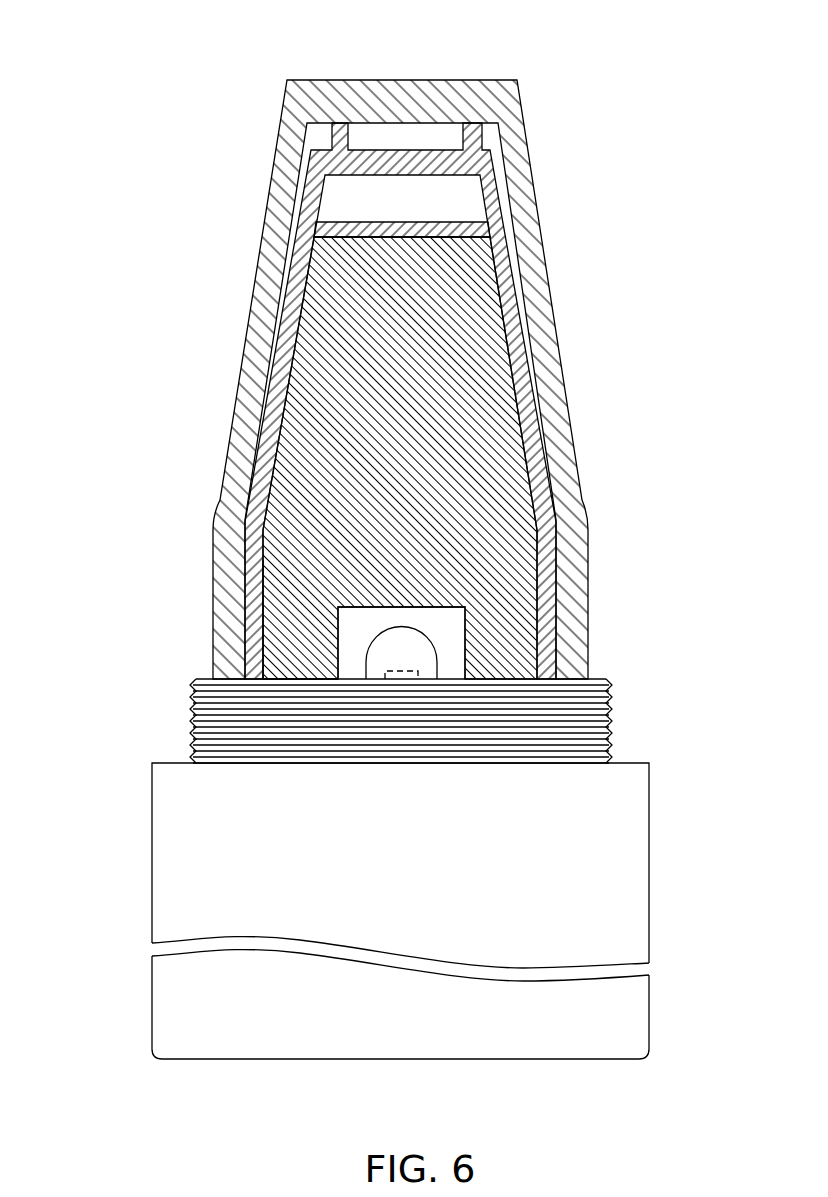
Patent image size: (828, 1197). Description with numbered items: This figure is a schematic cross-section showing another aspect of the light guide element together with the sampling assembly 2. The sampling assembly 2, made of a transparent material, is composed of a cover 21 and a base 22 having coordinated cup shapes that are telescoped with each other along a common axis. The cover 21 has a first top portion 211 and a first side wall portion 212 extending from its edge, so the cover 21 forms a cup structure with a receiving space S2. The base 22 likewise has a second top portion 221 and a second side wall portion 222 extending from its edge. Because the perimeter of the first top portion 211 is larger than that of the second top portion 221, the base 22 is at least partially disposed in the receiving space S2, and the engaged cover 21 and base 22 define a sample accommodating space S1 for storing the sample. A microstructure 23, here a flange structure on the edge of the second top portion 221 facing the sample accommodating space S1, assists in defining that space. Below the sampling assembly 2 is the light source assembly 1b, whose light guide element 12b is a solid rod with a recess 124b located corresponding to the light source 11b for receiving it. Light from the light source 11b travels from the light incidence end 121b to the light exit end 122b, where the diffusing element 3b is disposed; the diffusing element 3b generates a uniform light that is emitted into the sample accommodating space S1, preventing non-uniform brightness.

The sampling assembly 2 is at (372, 35).
The cover 21 is at (400, 352).
The first top portion 211 is at (423, 92).
The first side wall portion 212 is at (268, 195).
The base 22 is at (421, 358).
The second top portion 221 is at (447, 165).
The second side wall portion 222 is at (512, 318).
The microstructure 23 is at (472, 137).
The sample accommodating space S1 is at (448, 122).
The receiving space S2 is at (508, 220).
The diffusing element 3b is at (402, 223).
The light guide element 12b is at (490, 410).
The light incidence end 121b is at (290, 665).
The light exit end 122b is at (330, 247).
The recess 124b is at (447, 605).
The light source 11b is at (418, 652).
The light source assembly 1b is at (150, 830).